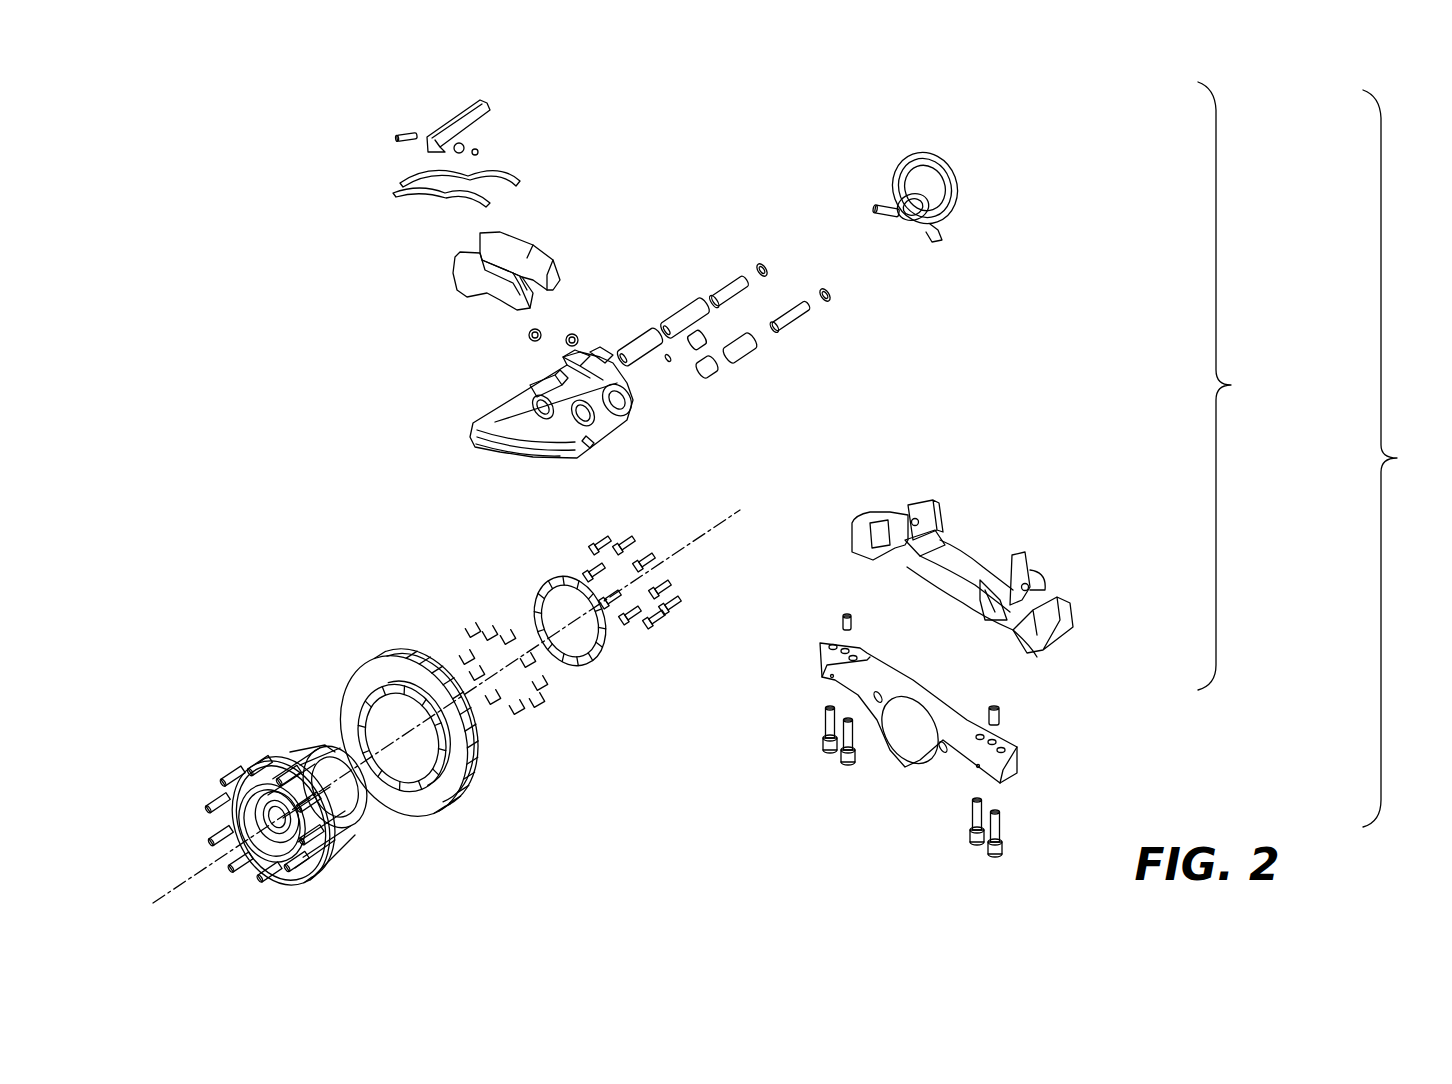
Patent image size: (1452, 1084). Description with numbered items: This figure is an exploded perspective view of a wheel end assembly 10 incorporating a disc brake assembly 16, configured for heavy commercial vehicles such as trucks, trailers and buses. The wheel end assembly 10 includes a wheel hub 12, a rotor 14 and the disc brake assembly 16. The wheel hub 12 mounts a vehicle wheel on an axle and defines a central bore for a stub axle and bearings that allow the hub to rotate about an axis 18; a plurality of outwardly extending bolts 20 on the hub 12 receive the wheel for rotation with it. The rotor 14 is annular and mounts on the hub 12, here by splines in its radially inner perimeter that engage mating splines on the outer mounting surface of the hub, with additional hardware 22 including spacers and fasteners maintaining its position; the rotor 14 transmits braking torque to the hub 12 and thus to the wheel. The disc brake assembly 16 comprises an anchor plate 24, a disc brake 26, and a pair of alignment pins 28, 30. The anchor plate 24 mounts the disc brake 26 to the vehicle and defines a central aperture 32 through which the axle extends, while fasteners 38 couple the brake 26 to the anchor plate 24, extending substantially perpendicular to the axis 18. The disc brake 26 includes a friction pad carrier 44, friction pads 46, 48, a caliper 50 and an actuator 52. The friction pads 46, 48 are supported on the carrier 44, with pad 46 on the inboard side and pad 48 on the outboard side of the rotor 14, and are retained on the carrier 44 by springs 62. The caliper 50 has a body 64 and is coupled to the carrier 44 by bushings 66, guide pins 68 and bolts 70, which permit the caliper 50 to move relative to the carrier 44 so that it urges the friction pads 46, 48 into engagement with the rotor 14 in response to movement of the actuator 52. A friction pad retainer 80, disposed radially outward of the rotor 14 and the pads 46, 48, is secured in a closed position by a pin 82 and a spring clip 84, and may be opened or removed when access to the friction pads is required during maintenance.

The wheel end assembly 10 is at (305, 515).
The wheel hub 12 is at (258, 833).
The rotor 14 is at (445, 790).
The disc brake assembly 16 is at (1396, 458).
The axis 18 is at (197, 877).
The bolts 20 is at (212, 847).
The additional hardware 22 is at (597, 525).
The anchor plate 24 is at (918, 762).
The disc brake 26 is at (1235, 386).
The alignment pin 28 is at (1000, 716).
The alignment pin 30 is at (842, 623).
The central aperture 32 is at (912, 727).
The fasteners 38 is at (1000, 837).
The friction pad carrier 44 is at (980, 545).
The friction pad 46 is at (533, 260).
The friction pad 48 is at (467, 280).
The caliper 50 is at (602, 424).
The actuator 52 is at (960, 203).
The springs 62 is at (400, 186).
The body 64 is at (592, 445).
The bushings 66 is at (713, 373).
The guide pins 68 is at (747, 350).
The bolts 70 is at (793, 328).
The friction pad retainer 80 is at (453, 115).
The pin 82 is at (393, 140).
The spring clip 84 is at (480, 150).